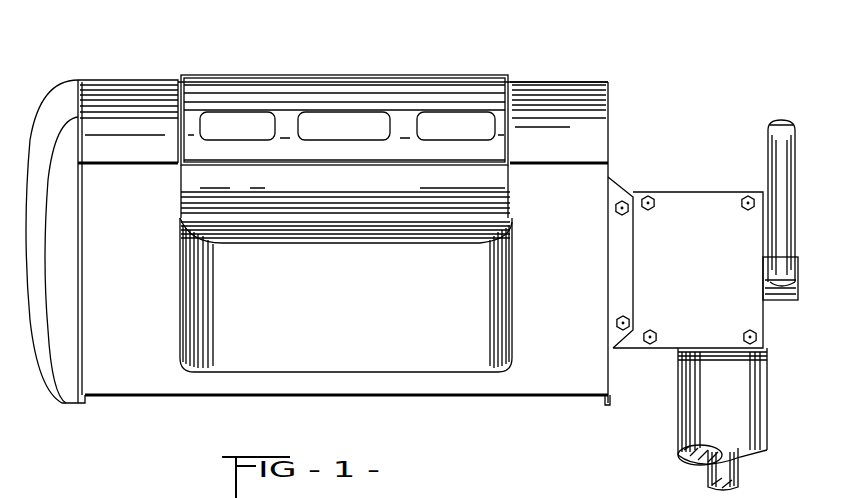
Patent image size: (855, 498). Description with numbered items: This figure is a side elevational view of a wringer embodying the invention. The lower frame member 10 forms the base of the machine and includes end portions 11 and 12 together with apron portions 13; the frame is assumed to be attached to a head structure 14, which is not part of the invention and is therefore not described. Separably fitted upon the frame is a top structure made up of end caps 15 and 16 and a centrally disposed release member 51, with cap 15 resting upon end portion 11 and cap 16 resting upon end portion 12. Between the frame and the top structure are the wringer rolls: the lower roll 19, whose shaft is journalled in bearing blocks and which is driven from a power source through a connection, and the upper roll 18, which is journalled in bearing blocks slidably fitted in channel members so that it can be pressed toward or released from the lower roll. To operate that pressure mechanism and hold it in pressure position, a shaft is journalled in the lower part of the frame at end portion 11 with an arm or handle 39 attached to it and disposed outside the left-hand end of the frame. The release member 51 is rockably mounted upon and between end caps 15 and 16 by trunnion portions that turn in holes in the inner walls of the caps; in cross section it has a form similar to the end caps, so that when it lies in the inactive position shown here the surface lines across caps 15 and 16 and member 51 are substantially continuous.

The lower frame member 10 is at (469, 397).
The end portion 11 is at (111, 280).
The end portion 12 is at (549, 280).
The apron portion 13 is at (346, 295).
The head structure 14 is at (693, 197).
The end cap 15 is at (137, 80).
The end cap 16 is at (549, 82).
The upper roll 18 is at (467, 188).
The lower roll 19 is at (290, 232).
The arm or handle 39 is at (52, 107).
The release member 51 is at (338, 75).